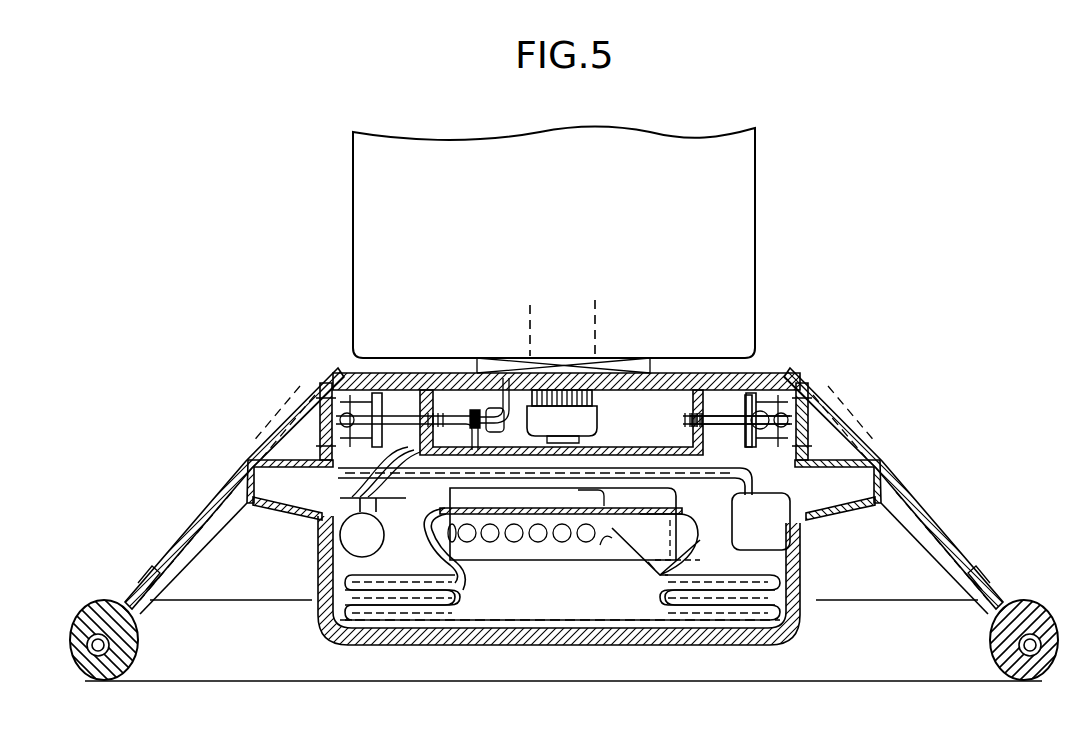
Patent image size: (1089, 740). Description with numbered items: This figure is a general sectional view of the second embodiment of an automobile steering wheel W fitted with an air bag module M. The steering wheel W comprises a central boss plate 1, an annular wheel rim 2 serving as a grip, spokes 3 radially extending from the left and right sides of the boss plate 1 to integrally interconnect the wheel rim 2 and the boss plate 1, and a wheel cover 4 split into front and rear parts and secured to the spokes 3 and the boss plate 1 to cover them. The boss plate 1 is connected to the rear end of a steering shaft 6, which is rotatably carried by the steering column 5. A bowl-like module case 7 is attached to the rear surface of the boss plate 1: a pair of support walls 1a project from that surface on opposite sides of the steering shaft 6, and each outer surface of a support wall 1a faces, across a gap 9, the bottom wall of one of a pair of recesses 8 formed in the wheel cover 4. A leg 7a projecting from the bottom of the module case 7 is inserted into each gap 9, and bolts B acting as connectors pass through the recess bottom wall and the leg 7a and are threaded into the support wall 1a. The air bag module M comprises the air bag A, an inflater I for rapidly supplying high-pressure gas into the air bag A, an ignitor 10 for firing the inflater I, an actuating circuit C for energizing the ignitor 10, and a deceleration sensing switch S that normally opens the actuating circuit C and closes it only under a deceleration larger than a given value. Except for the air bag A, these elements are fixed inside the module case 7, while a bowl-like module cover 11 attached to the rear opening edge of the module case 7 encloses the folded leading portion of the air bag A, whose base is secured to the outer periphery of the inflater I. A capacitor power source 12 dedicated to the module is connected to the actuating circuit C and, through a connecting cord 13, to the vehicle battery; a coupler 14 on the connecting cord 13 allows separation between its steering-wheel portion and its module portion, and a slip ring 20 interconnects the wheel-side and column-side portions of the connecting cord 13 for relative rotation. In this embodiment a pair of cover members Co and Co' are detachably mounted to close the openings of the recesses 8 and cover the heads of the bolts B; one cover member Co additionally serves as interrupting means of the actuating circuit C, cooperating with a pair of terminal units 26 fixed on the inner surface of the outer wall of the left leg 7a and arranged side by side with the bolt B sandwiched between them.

The boss plate 1 is at (620, 392).
The support walls 1a is at (426, 399).
The wheel rim 2 is at (96, 681).
The spokes 3 is at (186, 540).
The wheel cover 4 is at (208, 514).
The steering column 5 is at (568, 240).
The steering shaft 6 is at (597, 315).
The module case 7 is at (326, 505).
The legs 7a is at (407, 393).
The recesses 8 is at (334, 447).
The gap 9 is at (424, 393).
The ignitor 10 is at (590, 499).
The module cover 11 is at (583, 645).
The power source 12 is at (372, 546).
The connecting cord 13 is at (515, 400).
The coupler 14 is at (497, 418).
The slip ring 20 is at (648, 373).
The terminal units 26 is at (383, 392).
The air bag A is at (658, 577).
The bolts B is at (352, 428).
The actuating circuit C is at (710, 492).
The cover member Co is at (281, 410).
The cover member Co' is at (833, 412).
The inflater I is at (517, 569).
The air bag module M is at (476, 652).
The deceleration sensing switch S is at (770, 537).
The steering wheel W is at (259, 690).